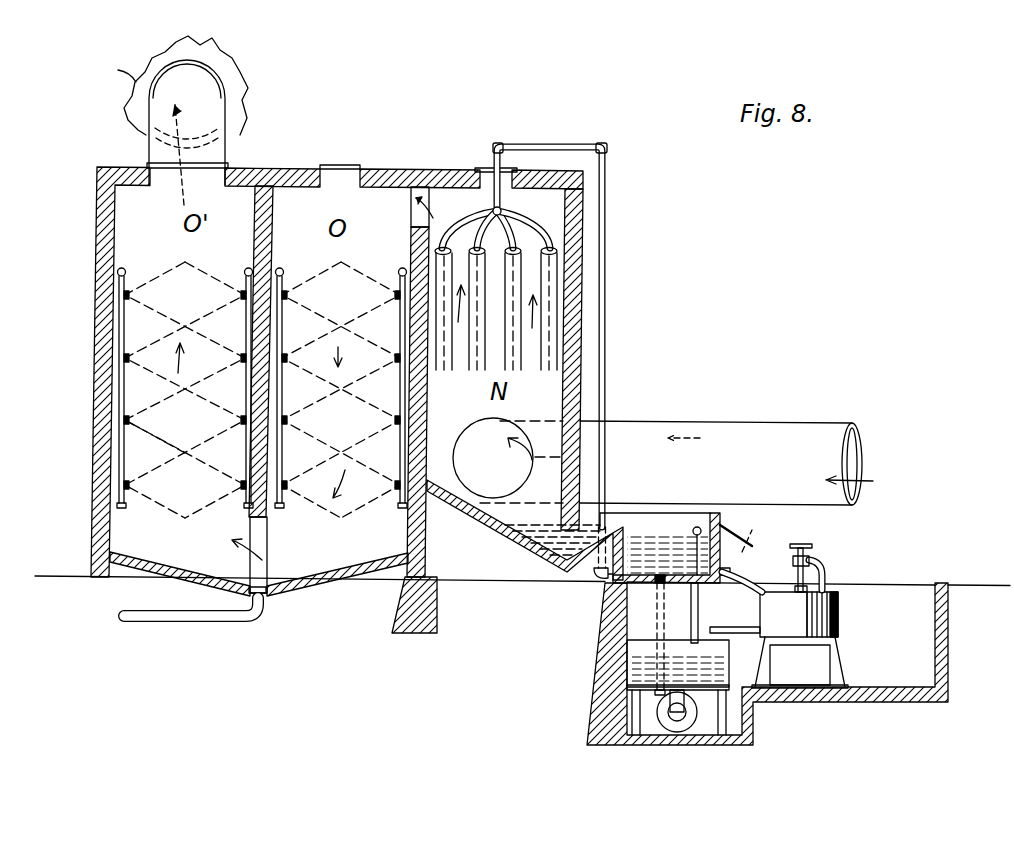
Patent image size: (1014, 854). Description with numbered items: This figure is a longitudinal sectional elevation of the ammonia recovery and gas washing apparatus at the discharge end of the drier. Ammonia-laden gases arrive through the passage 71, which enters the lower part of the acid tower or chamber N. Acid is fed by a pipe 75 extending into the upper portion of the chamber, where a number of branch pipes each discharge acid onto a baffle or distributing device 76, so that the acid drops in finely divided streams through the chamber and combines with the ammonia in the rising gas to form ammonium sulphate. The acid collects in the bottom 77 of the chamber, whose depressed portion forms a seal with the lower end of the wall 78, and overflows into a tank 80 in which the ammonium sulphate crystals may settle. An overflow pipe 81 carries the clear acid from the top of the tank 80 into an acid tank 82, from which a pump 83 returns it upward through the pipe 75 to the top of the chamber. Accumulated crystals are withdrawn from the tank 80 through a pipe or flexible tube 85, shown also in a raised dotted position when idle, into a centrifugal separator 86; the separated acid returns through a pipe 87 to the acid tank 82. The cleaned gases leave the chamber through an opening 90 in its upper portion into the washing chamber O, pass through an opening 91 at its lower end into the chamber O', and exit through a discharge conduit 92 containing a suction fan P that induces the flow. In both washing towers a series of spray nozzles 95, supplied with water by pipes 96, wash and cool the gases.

The passage 71 is at (726, 463).
The pipe 75 is at (545, 142).
The distributing device 76 is at (473, 242).
The bottom 77 is at (545, 553).
The wall 78 is at (578, 470).
The tank 80 is at (665, 545).
The overflow pipe 81 is at (699, 600).
The acid tank 82 is at (625, 661).
The pump 83 is at (657, 712).
The flexible tube 85 is at (771, 558).
The separator 86 is at (800, 640).
The pipe 87 is at (737, 616).
The opening 90 is at (411, 215).
The opening 91 is at (268, 551).
The discharge conduit 92 is at (237, 134).
The spray nozzles 95 is at (244, 295).
The pipes 96 is at (244, 421).